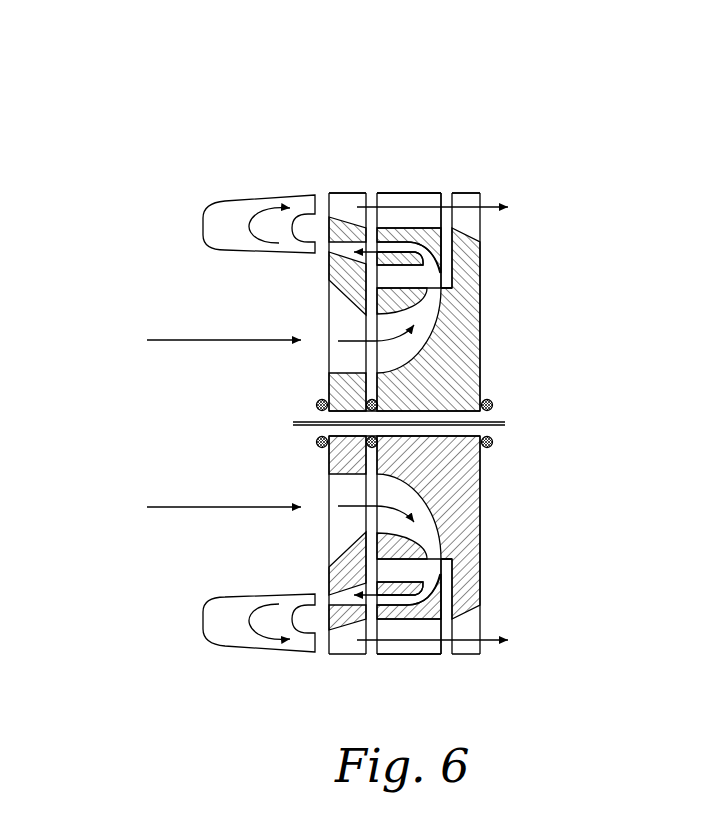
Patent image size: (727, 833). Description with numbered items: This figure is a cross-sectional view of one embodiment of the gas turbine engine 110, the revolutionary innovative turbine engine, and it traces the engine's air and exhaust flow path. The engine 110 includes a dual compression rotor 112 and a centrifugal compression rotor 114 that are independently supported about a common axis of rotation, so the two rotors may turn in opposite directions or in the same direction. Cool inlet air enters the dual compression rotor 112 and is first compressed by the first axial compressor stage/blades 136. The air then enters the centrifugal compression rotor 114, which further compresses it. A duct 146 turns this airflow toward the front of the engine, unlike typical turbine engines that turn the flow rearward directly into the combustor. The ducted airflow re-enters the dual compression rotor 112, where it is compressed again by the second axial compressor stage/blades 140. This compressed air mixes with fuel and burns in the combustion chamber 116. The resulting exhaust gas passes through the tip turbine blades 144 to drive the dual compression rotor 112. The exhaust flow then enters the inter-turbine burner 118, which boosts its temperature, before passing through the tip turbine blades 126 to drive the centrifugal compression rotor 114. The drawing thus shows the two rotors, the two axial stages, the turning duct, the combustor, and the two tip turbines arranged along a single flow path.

The gas turbine engine 110 is at (142, 122).
The dual compression rotor 112 is at (343, 191).
The centrifugal compression rotor 114 is at (484, 252).
The combustion chamber 116 is at (255, 195).
The inter-turbine burner 118 is at (436, 193).
The tip turbine blades 126 is at (473, 193).
The first axial compressor stage/blades 136 is at (342, 317).
The second axial compressor stage/blades 140 is at (328, 248).
The tip turbine blades 144 is at (364, 193).
The duct 146 is at (410, 193).